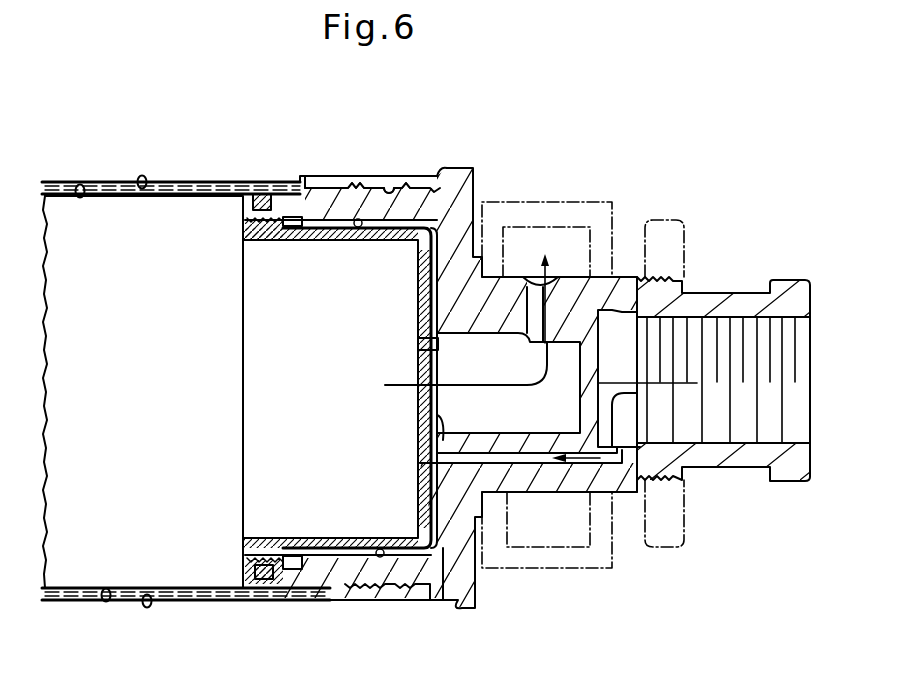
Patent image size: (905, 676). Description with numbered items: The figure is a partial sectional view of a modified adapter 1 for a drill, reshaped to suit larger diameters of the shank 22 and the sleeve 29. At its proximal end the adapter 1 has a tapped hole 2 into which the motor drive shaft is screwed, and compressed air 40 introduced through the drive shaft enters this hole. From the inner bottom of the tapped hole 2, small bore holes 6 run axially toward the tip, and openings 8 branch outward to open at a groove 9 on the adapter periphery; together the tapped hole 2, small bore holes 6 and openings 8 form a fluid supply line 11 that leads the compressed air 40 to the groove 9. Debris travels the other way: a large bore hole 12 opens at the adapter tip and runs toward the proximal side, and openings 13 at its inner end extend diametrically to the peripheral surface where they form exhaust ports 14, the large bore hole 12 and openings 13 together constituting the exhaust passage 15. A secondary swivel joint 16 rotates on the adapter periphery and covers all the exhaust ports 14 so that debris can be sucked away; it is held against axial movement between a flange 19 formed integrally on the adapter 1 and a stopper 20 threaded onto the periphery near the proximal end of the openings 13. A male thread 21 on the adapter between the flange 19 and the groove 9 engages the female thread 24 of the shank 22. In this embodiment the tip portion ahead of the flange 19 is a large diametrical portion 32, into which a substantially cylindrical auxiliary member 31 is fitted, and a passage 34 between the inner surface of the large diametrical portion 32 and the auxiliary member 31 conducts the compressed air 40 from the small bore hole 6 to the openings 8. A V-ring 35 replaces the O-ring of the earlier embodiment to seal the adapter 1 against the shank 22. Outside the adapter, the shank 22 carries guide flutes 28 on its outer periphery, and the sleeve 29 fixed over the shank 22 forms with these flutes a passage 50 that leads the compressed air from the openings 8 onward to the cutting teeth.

The adapter 1 is at (725, 296).
The tapped hole 2 is at (778, 318).
The small bore holes 6 is at (525, 470).
The openings 8 is at (293, 575).
The groove 9 is at (305, 176).
The fluid supply line 11 is at (505, 440).
The large bore hole 12 is at (435, 425).
The openings 13 is at (568, 340).
The exhaust ports 14 is at (560, 278).
The exhaust passage 15 is at (420, 345).
The secondary swivel joint 16 is at (587, 200).
The flange 19 is at (462, 170).
The stopper 20 is at (663, 218).
The male thread 21 is at (418, 186).
The shank 22 is at (356, 185).
The female thread 24 is at (391, 190).
The guide flutes 28 is at (145, 196).
The sleeve 29 is at (178, 603).
The auxiliary member 31 is at (243, 427).
The large diametrical portion 32 is at (336, 198).
The passage 34 is at (358, 240).
The V-ring 35 is at (258, 182).
The compressed air 40 is at (614, 398).
The passage 50 is at (83, 182).